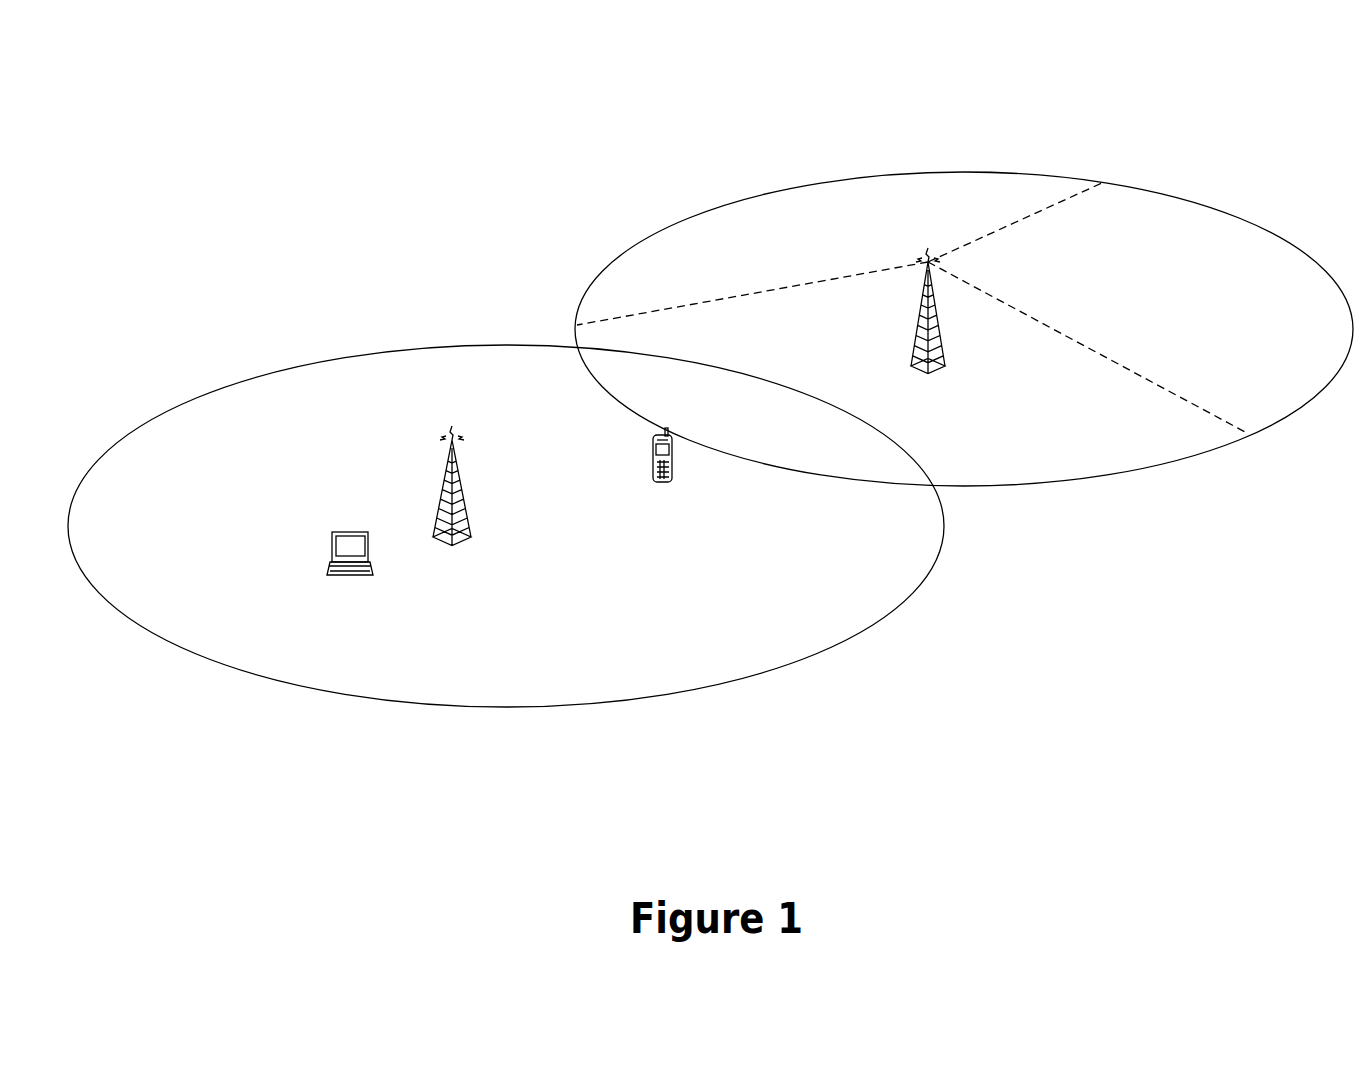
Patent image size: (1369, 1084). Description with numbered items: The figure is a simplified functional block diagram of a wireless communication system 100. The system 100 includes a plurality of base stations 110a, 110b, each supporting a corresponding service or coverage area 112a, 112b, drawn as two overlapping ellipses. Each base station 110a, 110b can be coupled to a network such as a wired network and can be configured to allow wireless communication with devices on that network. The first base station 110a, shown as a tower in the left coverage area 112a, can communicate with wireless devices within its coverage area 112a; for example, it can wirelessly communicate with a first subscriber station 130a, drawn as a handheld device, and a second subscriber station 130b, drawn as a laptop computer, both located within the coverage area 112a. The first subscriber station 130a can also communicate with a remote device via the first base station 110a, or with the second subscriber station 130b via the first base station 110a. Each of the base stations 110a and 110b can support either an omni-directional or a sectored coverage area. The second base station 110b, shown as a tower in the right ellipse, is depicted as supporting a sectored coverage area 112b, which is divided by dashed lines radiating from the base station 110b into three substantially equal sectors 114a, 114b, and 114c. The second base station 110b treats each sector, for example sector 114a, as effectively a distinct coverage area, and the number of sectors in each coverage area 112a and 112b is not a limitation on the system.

The wireless communication system 100 is at (1112, 69).
The first base station 110a is at (505, 485).
The second base station 110b is at (986, 321).
The coverage area 112a is at (408, 347).
The sectored coverage area 112b is at (902, 166).
The sector 114a is at (1056, 455).
The sector 114b is at (851, 230).
The sector 114c is at (1301, 331).
The first subscriber station 130a is at (657, 487).
The second subscriber station 130b is at (322, 550).